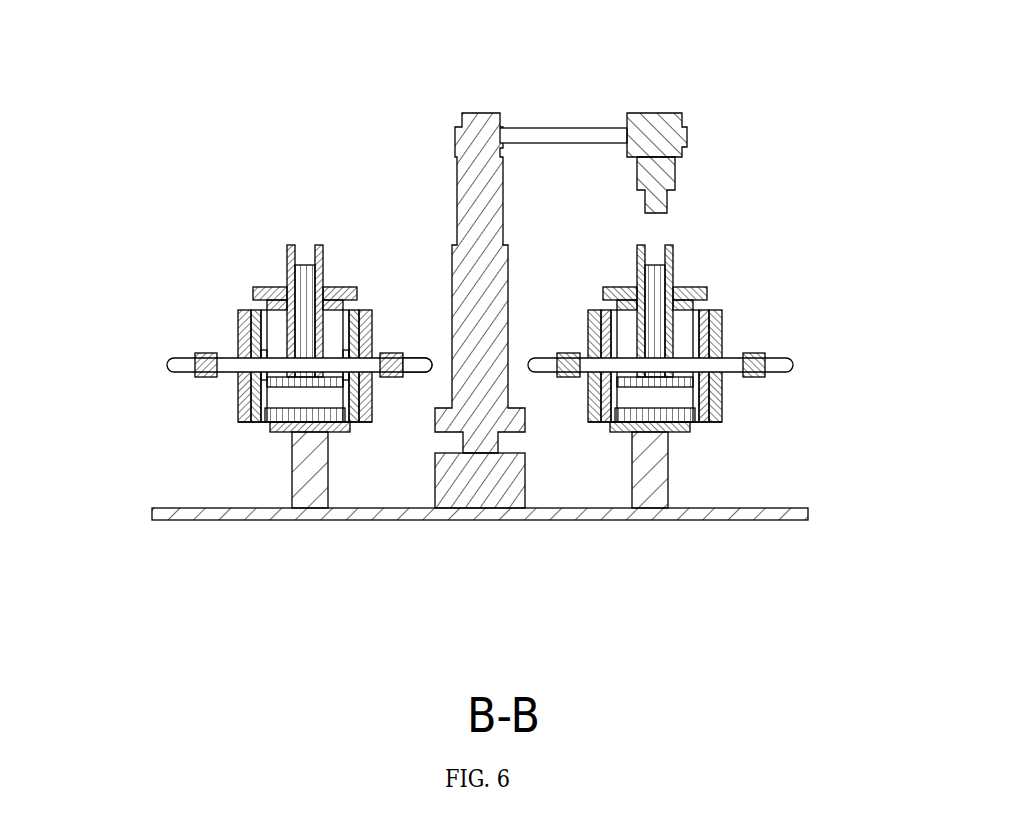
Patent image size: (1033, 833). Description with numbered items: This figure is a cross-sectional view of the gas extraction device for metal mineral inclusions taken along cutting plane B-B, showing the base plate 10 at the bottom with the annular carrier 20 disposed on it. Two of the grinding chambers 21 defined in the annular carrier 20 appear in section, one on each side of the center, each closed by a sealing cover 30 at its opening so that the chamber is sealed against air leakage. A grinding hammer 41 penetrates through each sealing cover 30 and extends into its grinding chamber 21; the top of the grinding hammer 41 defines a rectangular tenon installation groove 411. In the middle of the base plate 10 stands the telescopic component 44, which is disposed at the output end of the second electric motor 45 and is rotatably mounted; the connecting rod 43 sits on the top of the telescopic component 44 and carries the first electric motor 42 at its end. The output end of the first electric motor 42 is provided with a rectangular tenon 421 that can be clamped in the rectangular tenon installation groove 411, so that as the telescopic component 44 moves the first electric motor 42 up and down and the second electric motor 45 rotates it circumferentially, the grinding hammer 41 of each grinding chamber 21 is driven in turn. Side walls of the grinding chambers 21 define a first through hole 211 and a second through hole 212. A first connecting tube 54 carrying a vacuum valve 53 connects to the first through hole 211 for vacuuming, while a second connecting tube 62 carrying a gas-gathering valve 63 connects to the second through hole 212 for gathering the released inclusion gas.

The base plate 10 is at (270, 508).
The annular carrier 20 is at (715, 397).
The grinding chamber 21 is at (282, 398).
The first through hole 211 is at (358, 365).
The second through hole 212 is at (263, 365).
The sealing cover 30 is at (268, 288).
The grinding hammer 41 is at (662, 325).
The rectangular tenon installation groove 411 is at (657, 257).
The first electric motor 42 is at (670, 118).
The rectangular tenon 421 is at (663, 200).
The connecting rod 43 is at (555, 128).
The telescopic component 44 is at (477, 128).
The second electric motor 45 is at (485, 482).
The vacuum valve 53 is at (390, 357).
The first connecting tube 54 is at (418, 368).
The second connecting tube 62 is at (787, 367).
The gas-gathering valve 63 is at (757, 355).